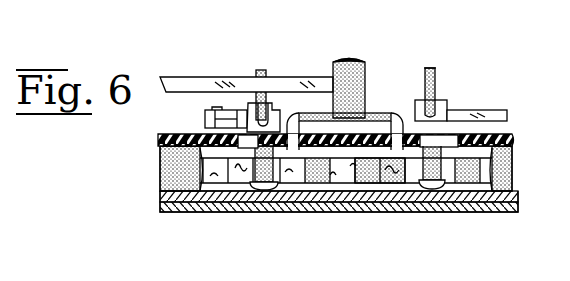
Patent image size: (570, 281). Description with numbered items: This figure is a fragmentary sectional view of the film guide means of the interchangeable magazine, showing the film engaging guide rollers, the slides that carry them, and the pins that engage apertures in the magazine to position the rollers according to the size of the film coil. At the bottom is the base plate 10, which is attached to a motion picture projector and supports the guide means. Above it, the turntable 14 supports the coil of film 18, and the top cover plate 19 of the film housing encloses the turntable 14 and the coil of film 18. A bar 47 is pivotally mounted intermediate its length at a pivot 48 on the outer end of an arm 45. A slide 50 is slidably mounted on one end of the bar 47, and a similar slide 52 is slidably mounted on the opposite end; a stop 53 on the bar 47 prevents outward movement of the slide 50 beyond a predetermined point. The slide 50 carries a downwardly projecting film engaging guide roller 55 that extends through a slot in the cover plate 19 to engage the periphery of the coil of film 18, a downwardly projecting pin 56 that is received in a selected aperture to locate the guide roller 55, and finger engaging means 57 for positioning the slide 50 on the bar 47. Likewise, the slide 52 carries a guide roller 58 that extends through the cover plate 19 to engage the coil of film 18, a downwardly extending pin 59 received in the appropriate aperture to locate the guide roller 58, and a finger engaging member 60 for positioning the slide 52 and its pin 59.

The base plate 10 is at (205, 213).
The turntable 14 is at (162, 200).
The coil of film 18 is at (386, 191).
The top cover plate 19 is at (513, 134).
The arm 45 is at (210, 77).
The bar 47 is at (509, 102).
The pivot 48 is at (366, 58).
The slide 50 is at (277, 102).
The slide 52 is at (447, 102).
The stop 53 is at (215, 106).
The film engaging guide roller 55 is at (270, 200).
The pin 56 is at (306, 113).
The finger engaging means 57 is at (261, 70).
The film engaging guide roller 58 is at (445, 191).
The pin 59 is at (395, 112).
The finger engaging member 60 is at (435, 68).